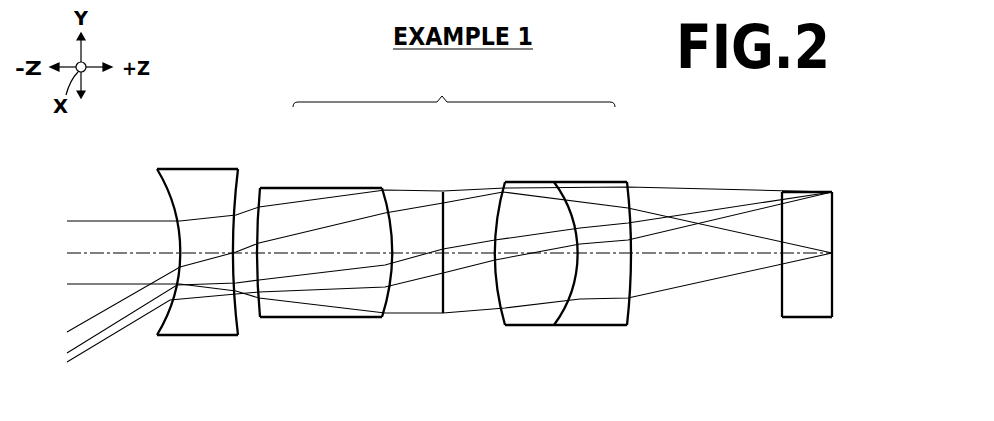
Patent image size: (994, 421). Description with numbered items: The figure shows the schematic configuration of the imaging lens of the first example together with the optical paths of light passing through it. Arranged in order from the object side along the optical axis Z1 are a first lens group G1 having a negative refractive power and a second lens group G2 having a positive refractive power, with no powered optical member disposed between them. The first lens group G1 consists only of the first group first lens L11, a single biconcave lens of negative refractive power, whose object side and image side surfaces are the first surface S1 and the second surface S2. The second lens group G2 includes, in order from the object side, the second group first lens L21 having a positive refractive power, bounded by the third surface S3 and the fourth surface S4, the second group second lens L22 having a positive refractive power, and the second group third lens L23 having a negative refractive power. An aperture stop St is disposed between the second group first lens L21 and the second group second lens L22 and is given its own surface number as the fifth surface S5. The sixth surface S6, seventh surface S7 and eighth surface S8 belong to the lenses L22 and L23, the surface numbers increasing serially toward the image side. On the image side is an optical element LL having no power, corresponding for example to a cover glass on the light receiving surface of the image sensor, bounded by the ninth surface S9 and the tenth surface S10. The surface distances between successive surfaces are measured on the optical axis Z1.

The first lens group G1 is at (210, 115).
The second lens group G2 is at (446, 230).
The first group first lens L11 is at (211, 168).
The second group first lens L21 is at (316, 188).
The second group second lens L22 is at (536, 181).
The second group third lens L23 is at (594, 181).
The aperture stop St is at (437, 191).
The optical element having no power LL is at (805, 202).
The optical axis Z1 is at (68, 252).
The first surface S1 is at (165, 318).
The second surface S2 is at (222, 287).
The third surface S3 is at (275, 282).
The fourth surface S4 is at (403, 286).
The fifth surface S5 is at (440, 298).
The sixth surface S6 is at (497, 304).
The seventh surface S7 is at (560, 298).
The eighth surface S8 is at (628, 306).
The ninth surface S9 is at (782, 303).
The tenth surface S10 is at (832, 303).